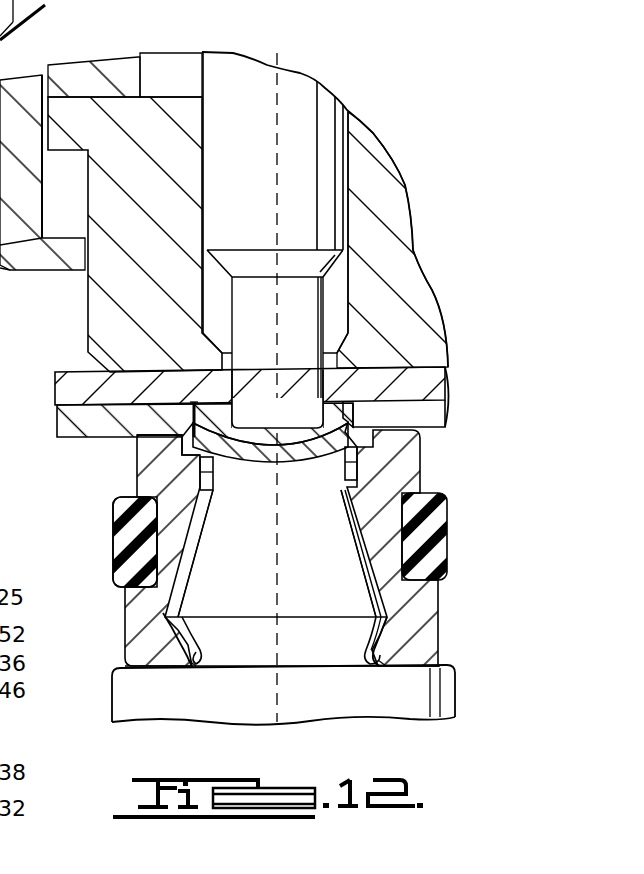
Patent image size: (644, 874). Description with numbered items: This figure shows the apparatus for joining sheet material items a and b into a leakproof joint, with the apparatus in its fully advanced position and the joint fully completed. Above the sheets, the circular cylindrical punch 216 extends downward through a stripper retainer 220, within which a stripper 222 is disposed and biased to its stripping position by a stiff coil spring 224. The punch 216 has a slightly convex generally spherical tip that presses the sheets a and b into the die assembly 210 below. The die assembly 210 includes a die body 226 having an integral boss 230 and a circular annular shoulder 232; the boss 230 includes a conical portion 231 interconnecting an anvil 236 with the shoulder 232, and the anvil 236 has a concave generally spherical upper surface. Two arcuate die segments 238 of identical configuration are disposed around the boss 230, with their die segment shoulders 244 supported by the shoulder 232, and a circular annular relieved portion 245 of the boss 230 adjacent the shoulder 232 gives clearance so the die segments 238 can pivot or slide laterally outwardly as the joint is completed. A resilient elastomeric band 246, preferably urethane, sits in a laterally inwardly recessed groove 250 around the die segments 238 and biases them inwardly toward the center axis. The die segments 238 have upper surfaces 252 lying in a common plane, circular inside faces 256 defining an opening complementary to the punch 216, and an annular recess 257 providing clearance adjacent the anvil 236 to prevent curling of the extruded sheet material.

The die assembly 210 is at (129, 622).
The circular cylindrical punch 216 is at (300, 166).
The stripper retainer 220 is at (57, 258).
The stripper 222 is at (390, 190).
The stiff coil spring 224 is at (98, 80).
The die body 226 is at (320, 721).
The integral boss 230 is at (300, 604).
The conical portion 231 is at (192, 543).
The circular annular shoulder 232 is at (363, 643).
The anvil 236 is at (300, 500).
The arcuate die segments 238 is at (393, 437).
The die segment shoulders 244 is at (175, 657).
The circular annular relieved portion 245 is at (198, 660).
The resilient elastomeric band 246 is at (127, 555).
The laterally inwardly recessed groove 250 is at (117, 527).
The upper surfaces of die segments 252 is at (140, 427).
The circular inside faces 256 is at (353, 458).
The annular recess or counterbore 257 is at (194, 437).
The sheet material item a is at (55, 385).
The sheet material item b is at (57, 422).